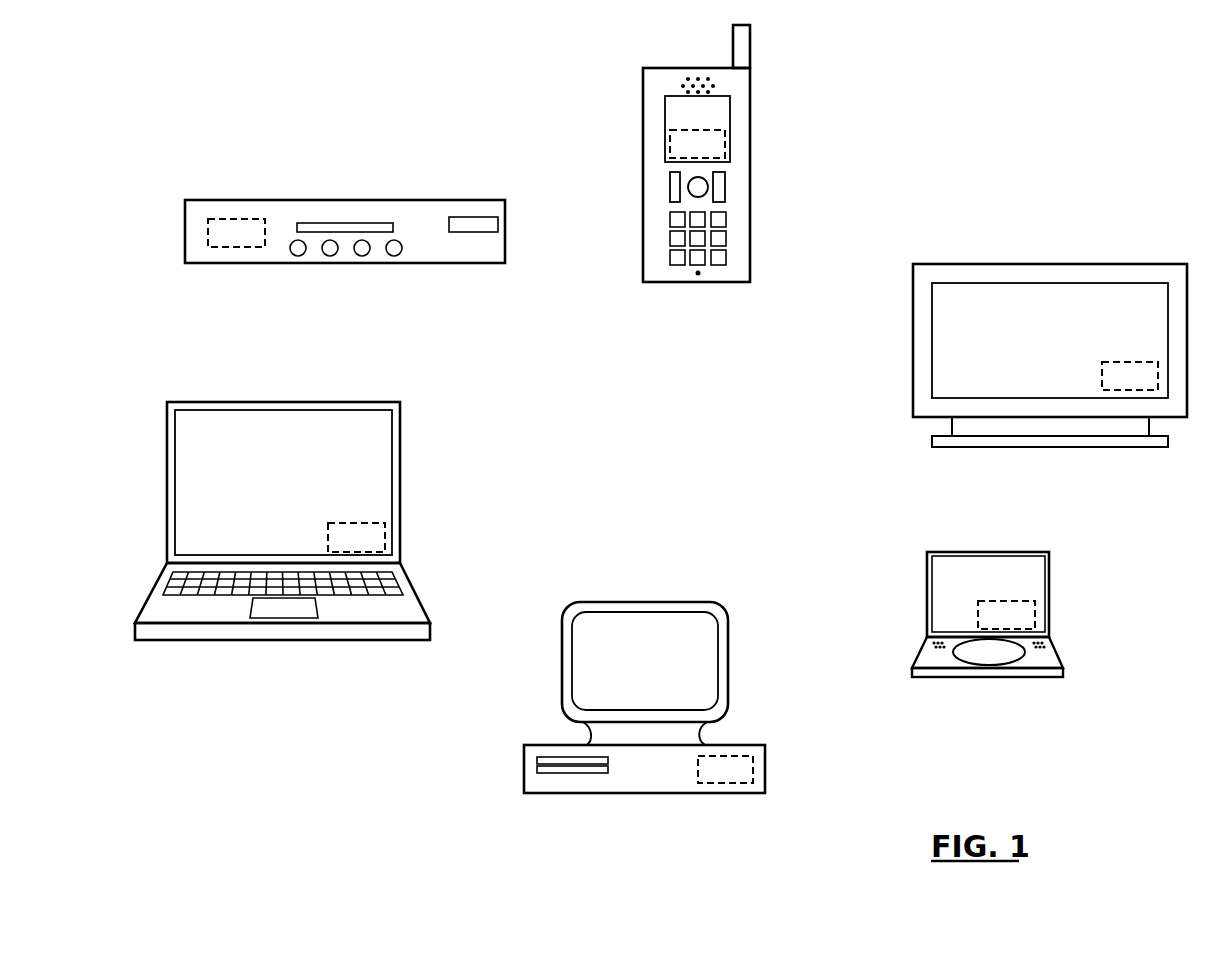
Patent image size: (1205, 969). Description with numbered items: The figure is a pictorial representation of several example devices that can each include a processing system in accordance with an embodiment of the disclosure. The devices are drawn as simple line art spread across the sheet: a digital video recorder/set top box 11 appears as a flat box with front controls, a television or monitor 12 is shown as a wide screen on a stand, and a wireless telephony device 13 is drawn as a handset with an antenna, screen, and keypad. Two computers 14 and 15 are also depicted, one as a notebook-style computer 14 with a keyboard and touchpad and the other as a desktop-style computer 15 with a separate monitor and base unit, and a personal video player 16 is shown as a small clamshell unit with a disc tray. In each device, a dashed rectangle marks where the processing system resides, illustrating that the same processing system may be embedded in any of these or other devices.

The digital video recorder/set top box 11 is at (486, 258).
The television or monitor 12 is at (966, 306).
The wireless telephony device 13 is at (669, 92).
The computer 14 is at (227, 452).
The computer 15 is at (614, 649).
The personal video player 16 is at (966, 583).